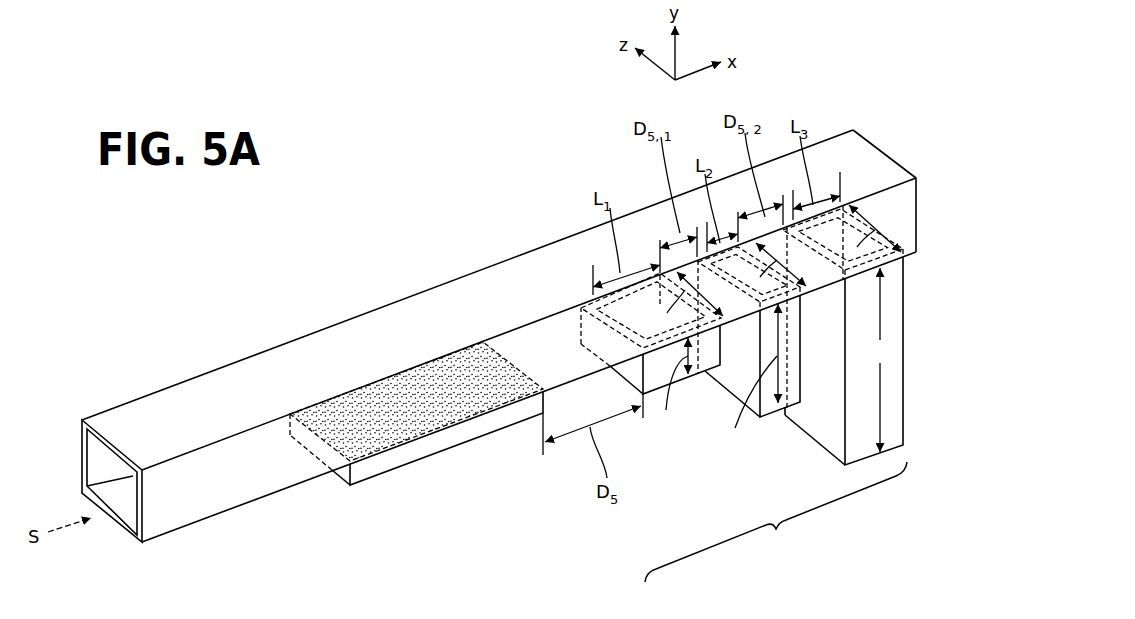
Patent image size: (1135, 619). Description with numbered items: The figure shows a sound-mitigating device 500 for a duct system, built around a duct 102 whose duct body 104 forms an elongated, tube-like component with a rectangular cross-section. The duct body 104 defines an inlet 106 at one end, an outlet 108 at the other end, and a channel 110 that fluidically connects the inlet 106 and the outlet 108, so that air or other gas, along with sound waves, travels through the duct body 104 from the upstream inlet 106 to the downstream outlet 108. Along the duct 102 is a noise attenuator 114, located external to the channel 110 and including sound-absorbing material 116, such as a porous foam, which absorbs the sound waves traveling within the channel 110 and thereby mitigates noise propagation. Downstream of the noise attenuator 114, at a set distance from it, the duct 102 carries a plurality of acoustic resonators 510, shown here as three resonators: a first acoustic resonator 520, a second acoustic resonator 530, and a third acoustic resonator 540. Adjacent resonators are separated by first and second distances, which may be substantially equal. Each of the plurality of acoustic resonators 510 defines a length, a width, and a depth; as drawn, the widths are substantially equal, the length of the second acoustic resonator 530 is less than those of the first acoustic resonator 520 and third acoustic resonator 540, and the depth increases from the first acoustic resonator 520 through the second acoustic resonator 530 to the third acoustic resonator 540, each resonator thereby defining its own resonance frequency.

The sound-mitigating device 500 is at (431, 152).
The duct 102 is at (332, 327).
The duct body 104 is at (392, 303).
The inlet 106 is at (82, 420).
The outlet 108 is at (853, 130).
The channel 110 is at (103, 461).
The noise attenuator 114 is at (432, 454).
The sound-absorbing material 116 is at (322, 410).
The plurality of acoustic resonators 510 is at (776, 522).
The first acoustic resonator 520 is at (699, 376).
The second acoustic resonator 530 is at (792, 406).
The third acoustic resonator 540 is at (904, 325).